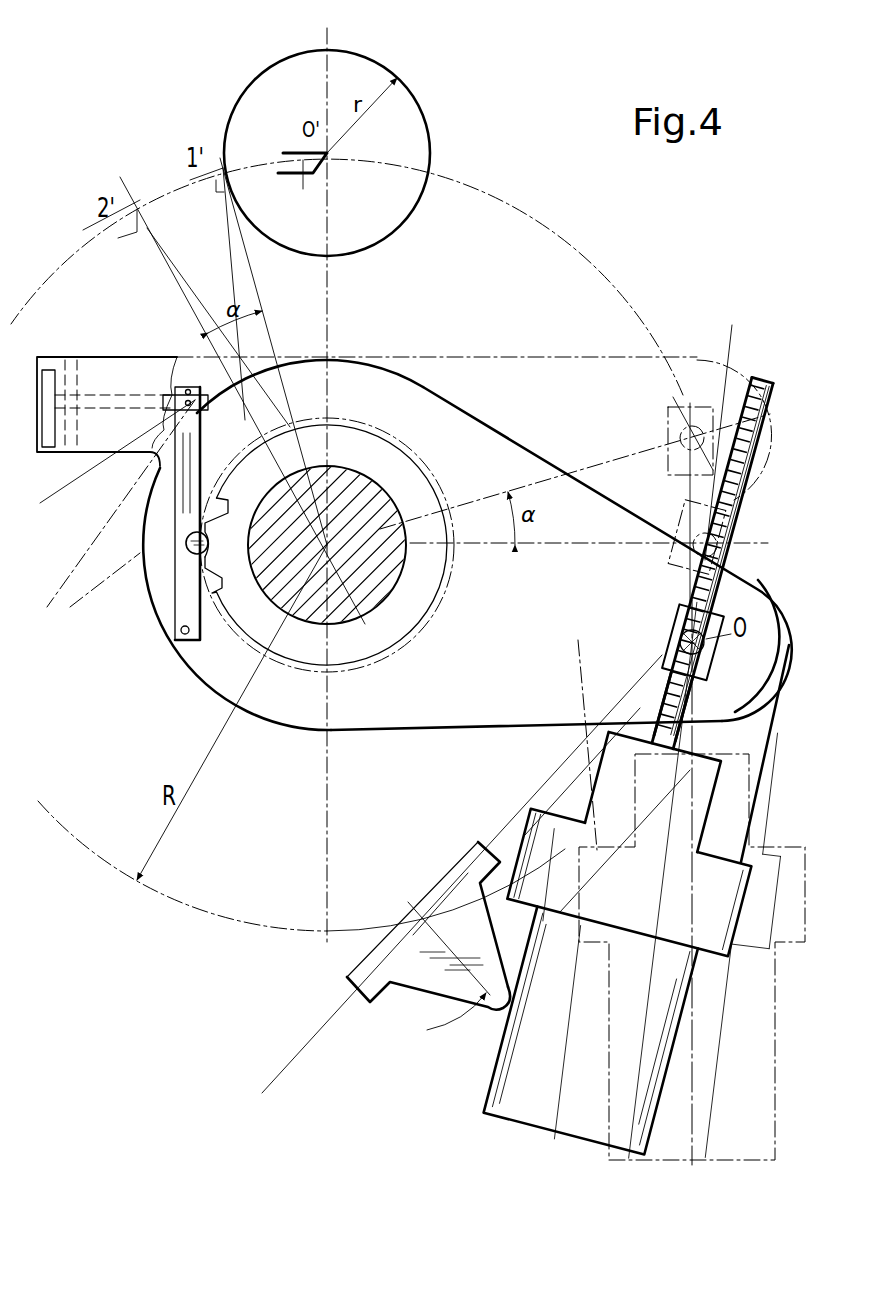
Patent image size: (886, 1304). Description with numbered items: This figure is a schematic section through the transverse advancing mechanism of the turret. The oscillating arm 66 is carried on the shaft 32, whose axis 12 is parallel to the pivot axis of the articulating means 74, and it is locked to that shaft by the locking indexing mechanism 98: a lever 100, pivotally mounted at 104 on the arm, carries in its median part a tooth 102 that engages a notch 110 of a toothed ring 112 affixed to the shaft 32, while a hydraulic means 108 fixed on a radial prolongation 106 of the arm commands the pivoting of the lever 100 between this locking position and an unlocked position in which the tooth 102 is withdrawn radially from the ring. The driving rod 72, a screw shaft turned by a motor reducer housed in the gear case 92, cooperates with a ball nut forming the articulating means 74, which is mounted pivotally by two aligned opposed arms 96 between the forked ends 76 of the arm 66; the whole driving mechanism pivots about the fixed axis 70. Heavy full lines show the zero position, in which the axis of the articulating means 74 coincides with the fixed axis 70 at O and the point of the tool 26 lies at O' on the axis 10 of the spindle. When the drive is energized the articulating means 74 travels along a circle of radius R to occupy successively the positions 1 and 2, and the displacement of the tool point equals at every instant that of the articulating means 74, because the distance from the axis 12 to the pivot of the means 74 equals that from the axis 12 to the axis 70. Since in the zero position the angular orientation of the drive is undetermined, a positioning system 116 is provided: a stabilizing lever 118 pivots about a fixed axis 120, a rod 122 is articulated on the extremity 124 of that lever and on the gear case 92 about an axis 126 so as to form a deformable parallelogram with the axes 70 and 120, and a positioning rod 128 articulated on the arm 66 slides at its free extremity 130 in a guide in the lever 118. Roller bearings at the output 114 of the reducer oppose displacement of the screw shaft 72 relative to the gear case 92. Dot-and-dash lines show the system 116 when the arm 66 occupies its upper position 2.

The axis of the spindle 10 is at (331, 152).
The tool 26 is at (302, 184).
The oscillating arm 66 is at (398, 383).
The radially outer end of the oscillating arm 76 is at (509, 724).
The axis of the shaft 12 is at (327, 557).
The shaft 32 is at (375, 492).
The notch 110 is at (237, 506).
The toothed ring 112 is at (237, 603).
The radial prolongation 106 is at (98, 368).
The hydraulic means 108 is at (46, 452).
The locking indexing mechanism 98 is at (153, 372).
The lever 100 is at (182, 597).
The tooth 102 is at (187, 551).
The pivot of the lever 104 is at (178, 642).
The driving rod 72 is at (762, 381).
The fixed axis 70 is at (668, 652).
The aligned opposed arms 96 is at (679, 641).
The articulating means 74 is at (700, 672).
The output of the reducer 114 is at (686, 796).
The rod 122 is at (602, 862).
The gear case 92 is at (712, 946).
The positioning rod 128 is at (511, 823).
The axis of articulation of the rod on the gear case 126 is at (763, 711).
The position 2 is at (702, 408).
The position 1 is at (716, 540).
The positioning system 116 is at (460, 850).
The stabilizing lever 118 is at (410, 977).
The fixed axis of the stabilizing lever 120 is at (443, 925).
The extremity of the stabilizing lever 124 is at (488, 1004).
The free extremity of the positioning rod 130 is at (459, 874).